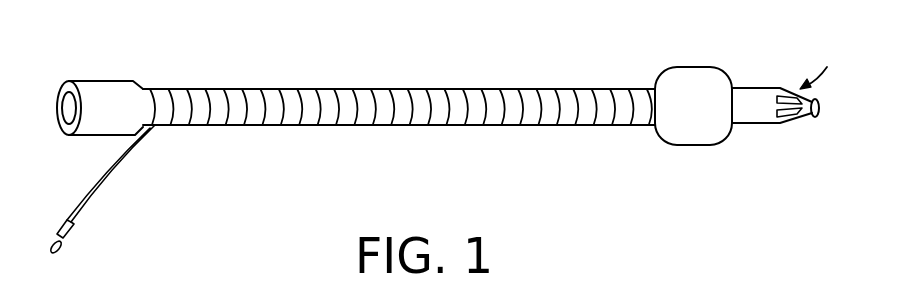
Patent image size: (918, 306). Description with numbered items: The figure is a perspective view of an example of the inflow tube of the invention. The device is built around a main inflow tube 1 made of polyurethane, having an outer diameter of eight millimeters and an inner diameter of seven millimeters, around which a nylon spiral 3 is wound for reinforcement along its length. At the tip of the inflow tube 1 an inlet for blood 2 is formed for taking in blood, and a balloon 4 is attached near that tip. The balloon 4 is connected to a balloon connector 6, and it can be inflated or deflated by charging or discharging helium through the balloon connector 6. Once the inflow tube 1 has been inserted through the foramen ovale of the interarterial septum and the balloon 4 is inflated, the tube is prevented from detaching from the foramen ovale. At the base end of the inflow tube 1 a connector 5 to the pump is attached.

The inflow tube 1 is at (282, 89).
The inlet for blood 2 is at (781, 118).
The nylon spiral 3 is at (432, 107).
The balloon 4 is at (700, 67).
The connector to the pump 5 is at (113, 80).
The balloon connector 6 is at (95, 195).